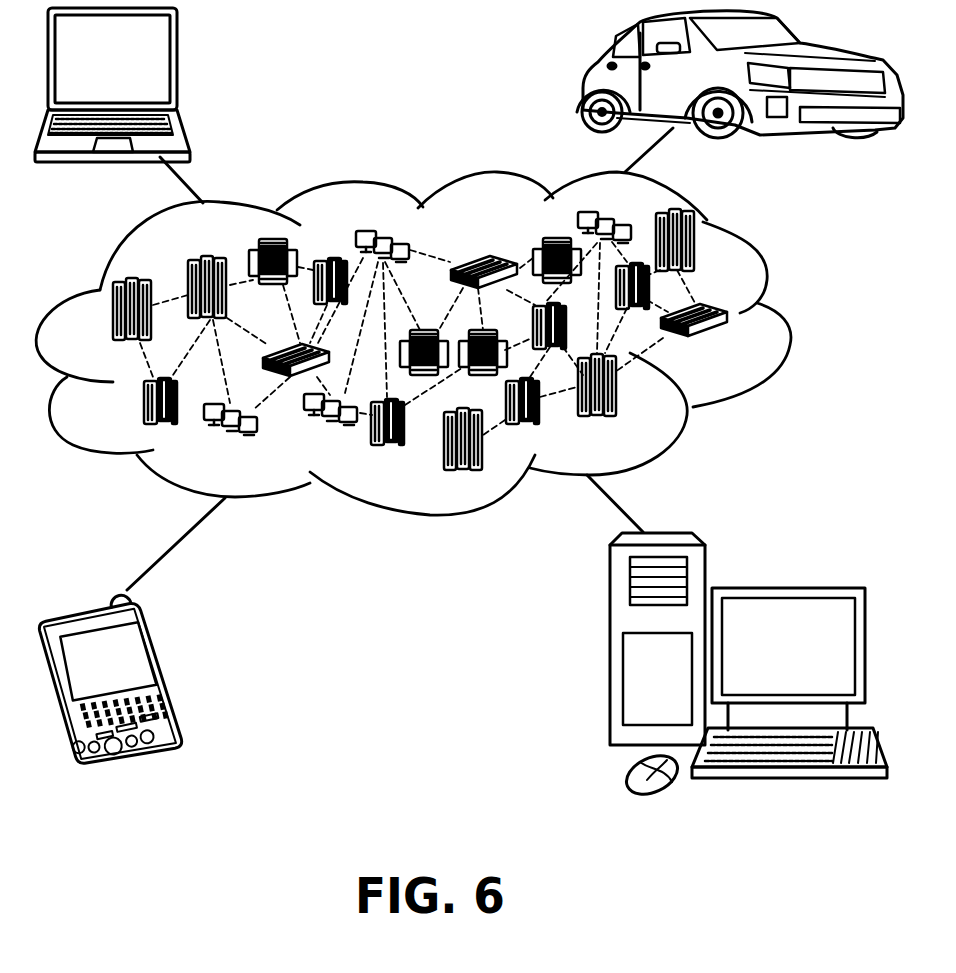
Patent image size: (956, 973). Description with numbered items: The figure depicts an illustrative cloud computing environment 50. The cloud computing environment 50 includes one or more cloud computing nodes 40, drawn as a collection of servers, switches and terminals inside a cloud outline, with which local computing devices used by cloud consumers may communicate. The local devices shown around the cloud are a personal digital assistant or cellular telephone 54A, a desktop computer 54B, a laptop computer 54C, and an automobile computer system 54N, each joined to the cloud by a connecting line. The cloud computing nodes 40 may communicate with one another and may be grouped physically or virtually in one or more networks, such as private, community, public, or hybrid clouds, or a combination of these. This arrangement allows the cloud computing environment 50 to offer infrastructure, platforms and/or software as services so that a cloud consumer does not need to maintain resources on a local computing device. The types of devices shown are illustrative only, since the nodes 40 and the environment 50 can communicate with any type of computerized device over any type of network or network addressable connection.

The laptop computer 54C is at (147, 66).
The automobile computer system 54N is at (582, 82).
The personal digital assistant or cellular telephone 54A is at (167, 673).
The desktop computer 54B is at (785, 588).
The cloud computing environment 50 is at (787, 320).
The cloud computing nodes 40 is at (745, 351).